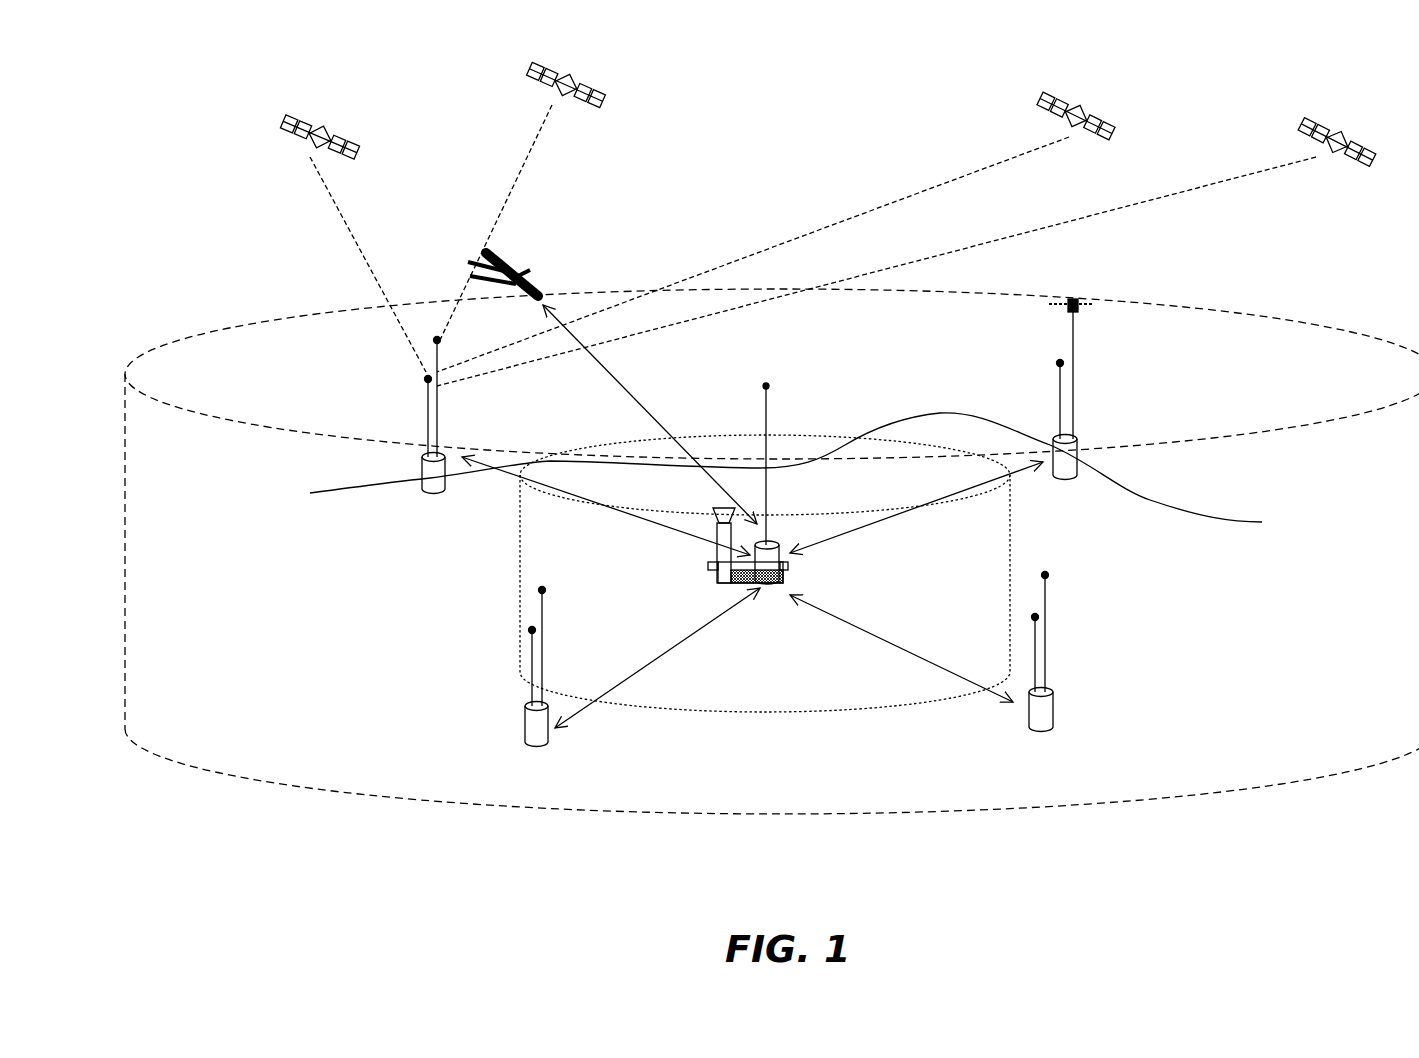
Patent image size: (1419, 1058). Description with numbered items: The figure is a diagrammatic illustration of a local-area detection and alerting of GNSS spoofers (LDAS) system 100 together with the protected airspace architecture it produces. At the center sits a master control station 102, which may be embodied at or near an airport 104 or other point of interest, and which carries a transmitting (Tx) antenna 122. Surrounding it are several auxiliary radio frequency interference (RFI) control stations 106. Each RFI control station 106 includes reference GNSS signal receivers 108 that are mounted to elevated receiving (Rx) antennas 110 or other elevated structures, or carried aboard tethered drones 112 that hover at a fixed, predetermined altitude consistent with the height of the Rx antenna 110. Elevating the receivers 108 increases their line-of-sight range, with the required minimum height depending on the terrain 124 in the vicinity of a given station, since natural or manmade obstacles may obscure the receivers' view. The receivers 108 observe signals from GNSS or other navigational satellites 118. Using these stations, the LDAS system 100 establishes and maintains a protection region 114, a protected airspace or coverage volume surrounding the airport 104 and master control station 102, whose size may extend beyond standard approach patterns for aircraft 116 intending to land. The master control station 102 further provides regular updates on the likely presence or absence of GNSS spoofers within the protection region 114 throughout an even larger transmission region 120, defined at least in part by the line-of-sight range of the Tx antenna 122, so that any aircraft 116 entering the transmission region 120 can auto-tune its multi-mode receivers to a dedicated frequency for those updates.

The local-area detection and alerting of GNSS spoofers (LDAS) system 100 is at (208, 92).
The master control station 102 is at (780, 540).
The airport 104 is at (727, 583).
The auxiliary radio frequency interference (RFI) control station 106 is at (422, 477).
The reference GNSS signal receiver 108 is at (426, 378).
The elevated receiving (Rx) antenna 110 is at (1056, 368).
The tethered drone 112 is at (1078, 300).
The protection region 114 is at (902, 705).
The aircraft 116 is at (510, 262).
The navigational satellite 118 is at (355, 148).
The transmission region 120 is at (1345, 332).
The transmitting (Tx) antenna 122 is at (758, 411).
The terrain 124 is at (912, 425).